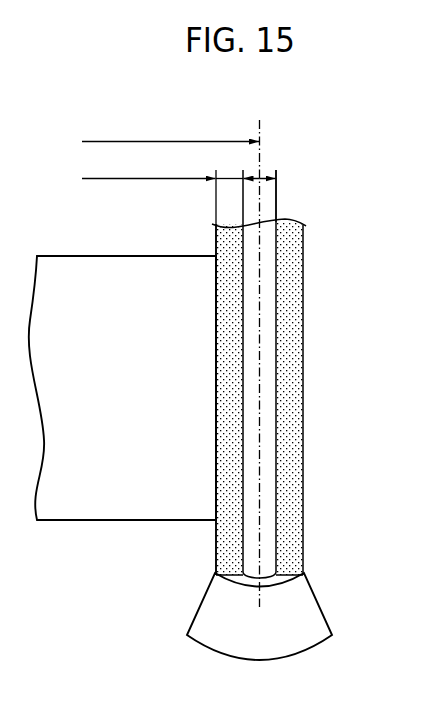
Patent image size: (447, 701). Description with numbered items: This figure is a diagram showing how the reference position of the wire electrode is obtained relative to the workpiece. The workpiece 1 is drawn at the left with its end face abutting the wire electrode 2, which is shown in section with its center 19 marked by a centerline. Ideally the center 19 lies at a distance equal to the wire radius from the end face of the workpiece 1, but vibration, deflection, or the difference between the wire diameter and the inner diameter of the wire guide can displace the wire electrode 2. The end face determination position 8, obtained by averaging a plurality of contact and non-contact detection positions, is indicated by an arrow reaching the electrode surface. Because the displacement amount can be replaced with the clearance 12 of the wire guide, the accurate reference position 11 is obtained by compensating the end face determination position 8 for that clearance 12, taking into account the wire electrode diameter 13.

The workpiece 1 is at (105, 285).
The wire electrode 2 is at (267, 303).
The end face determination position 8 is at (178, 178).
The reference position 11 is at (187, 141).
The clearance 12 is at (230, 178).
The wire electrode diameter 13 is at (265, 172).
The center 19 is at (260, 128).